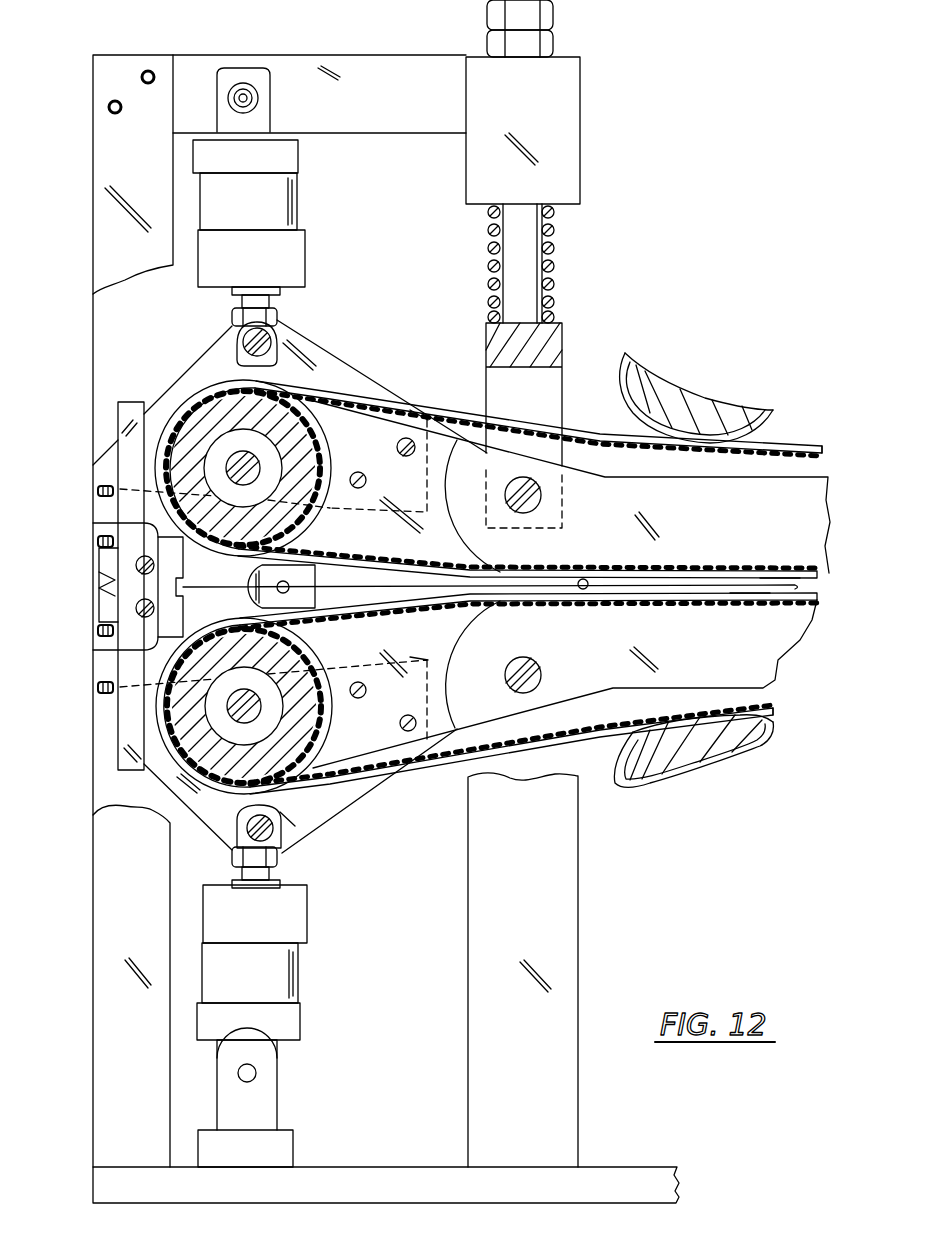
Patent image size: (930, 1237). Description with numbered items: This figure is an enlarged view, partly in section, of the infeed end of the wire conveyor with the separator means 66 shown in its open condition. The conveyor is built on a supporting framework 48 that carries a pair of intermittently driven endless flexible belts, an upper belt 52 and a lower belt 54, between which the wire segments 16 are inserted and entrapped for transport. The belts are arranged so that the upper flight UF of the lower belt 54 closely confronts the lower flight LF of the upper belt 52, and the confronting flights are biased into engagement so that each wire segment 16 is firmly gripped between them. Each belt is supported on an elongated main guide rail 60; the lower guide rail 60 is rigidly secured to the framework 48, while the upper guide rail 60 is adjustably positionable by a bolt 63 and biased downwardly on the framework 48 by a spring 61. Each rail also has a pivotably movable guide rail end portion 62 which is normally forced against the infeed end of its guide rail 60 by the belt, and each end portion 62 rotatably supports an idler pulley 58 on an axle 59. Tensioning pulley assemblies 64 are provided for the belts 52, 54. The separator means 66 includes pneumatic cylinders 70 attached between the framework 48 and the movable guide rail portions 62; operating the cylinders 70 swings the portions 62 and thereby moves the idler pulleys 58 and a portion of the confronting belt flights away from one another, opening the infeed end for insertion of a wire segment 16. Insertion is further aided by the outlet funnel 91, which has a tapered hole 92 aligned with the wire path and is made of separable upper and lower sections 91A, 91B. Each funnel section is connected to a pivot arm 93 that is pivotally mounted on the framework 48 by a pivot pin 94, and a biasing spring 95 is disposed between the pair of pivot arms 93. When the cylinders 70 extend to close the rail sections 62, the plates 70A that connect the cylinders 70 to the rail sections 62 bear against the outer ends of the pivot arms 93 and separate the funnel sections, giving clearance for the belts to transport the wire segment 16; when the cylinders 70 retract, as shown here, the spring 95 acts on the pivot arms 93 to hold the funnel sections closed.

The supporting framework 48 is at (100, 828).
The pneumatic cylinder 70 is at (297, 196).
The separator means 66 is at (384, 296).
The bolt 63 is at (555, 228).
The spring 61 is at (535, 242).
The idler pulley 58 is at (300, 510).
The axle 59 is at (255, 470).
The plate 70A is at (340, 372).
The guide rail end portion 62 is at (274, 576).
The main guide rail 60 is at (570, 545).
The wire segment 16 is at (596, 573).
The lower flight LF is at (790, 568).
The upper flight UF is at (745, 595).
The tensioning pulley assembly 64 is at (693, 397).
The upper belt 52 is at (796, 437).
The lower belt 54 is at (782, 726).
The upper funnel section 91A is at (118, 523).
The lower funnel section 91B is at (118, 655).
The pivot pin 94 is at (100, 543).
The pivot arm 93 is at (136, 566).
The biasing spring 95 is at (105, 590).
The tapered hole 92 is at (250, 590).
The outlet funnel 91 is at (330, 589).